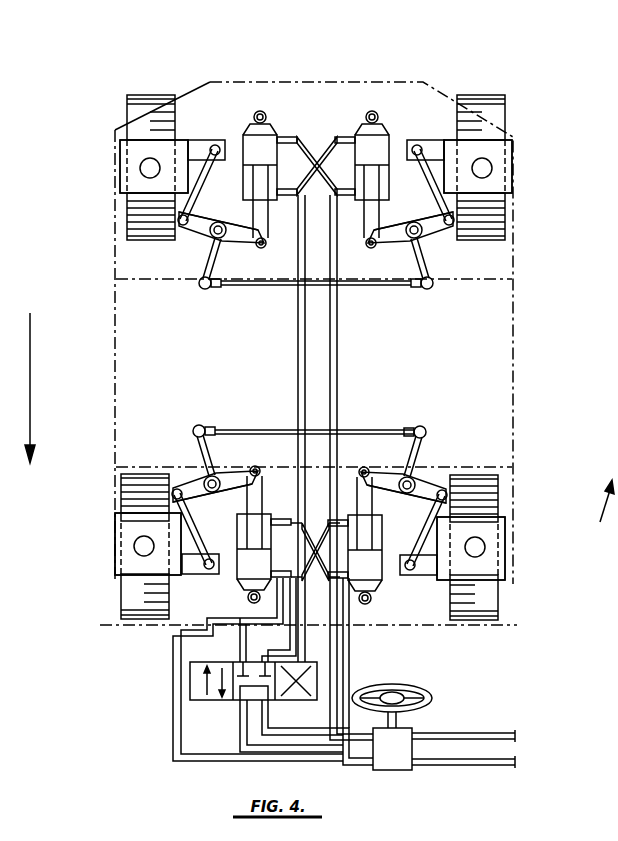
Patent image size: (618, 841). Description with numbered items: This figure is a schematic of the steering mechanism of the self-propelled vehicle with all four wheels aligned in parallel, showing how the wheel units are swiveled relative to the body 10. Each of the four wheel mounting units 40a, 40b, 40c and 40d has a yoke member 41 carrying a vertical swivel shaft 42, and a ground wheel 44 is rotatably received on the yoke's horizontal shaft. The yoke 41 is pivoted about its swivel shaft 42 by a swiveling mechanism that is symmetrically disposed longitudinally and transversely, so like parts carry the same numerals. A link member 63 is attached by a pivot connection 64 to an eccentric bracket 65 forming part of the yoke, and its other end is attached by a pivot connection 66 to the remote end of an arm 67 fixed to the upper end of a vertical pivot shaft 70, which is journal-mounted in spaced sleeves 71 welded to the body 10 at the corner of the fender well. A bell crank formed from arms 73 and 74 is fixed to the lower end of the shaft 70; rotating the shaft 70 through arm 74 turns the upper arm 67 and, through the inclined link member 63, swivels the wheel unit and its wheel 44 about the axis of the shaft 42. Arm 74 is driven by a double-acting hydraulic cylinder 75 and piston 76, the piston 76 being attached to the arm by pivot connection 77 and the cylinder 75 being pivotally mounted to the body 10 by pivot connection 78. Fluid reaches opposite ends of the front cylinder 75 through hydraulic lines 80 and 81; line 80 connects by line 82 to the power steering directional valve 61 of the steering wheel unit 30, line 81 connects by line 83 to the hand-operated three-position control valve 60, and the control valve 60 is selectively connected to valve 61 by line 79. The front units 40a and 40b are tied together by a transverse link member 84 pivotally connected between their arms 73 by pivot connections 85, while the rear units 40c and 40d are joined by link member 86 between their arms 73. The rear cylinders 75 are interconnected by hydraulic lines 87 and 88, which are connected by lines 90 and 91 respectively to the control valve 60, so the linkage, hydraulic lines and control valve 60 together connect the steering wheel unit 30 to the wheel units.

The body 10 is at (519, 353).
The steering wheel unit 30 is at (432, 695).
The front right wheel unit 40a is at (520, 527).
The wheel unit 40b is at (110, 519).
The rear wheel unit 40c is at (110, 187).
The rear wheel unit 40d is at (520, 187).
The yoke member 41 is at (120, 168).
The vertical swivel shaft 42 is at (142, 163).
The ground wheel 44 is at (147, 108).
The control valve 60 is at (193, 700).
The power steering directional valve 61 is at (402, 770).
The link member 63 is at (200, 186).
The pivot connection 64 is at (210, 140).
The eccentric bracket 65 is at (215, 145).
The pivot connection 66 is at (178, 222).
The arm 67 is at (196, 233).
The vertical pivot shaft 70 is at (217, 240).
The sleeves 71 is at (225, 248).
The bell crank arm 73 is at (204, 262).
The bell crank arm 74 is at (246, 245).
The double-acting hydraulic cylinder 75 is at (244, 130).
The piston 76 is at (264, 215).
The pivot connection 77 is at (266, 247).
The pivot connection 78 is at (262, 112).
The line 79 is at (316, 735).
The hydraulic line 80 is at (338, 522).
The hydraulic line 81 is at (284, 522).
The line 82 is at (173, 695).
The line 83 is at (343, 722).
The transverse link member 84 is at (344, 430).
The pivot connections 85 is at (205, 290).
The link member 86 is at (388, 289).
The hydraulic line 87 is at (333, 137).
The hydraulic line 88 is at (299, 137).
The line 90 is at (298, 328).
The line 91 is at (337, 345).